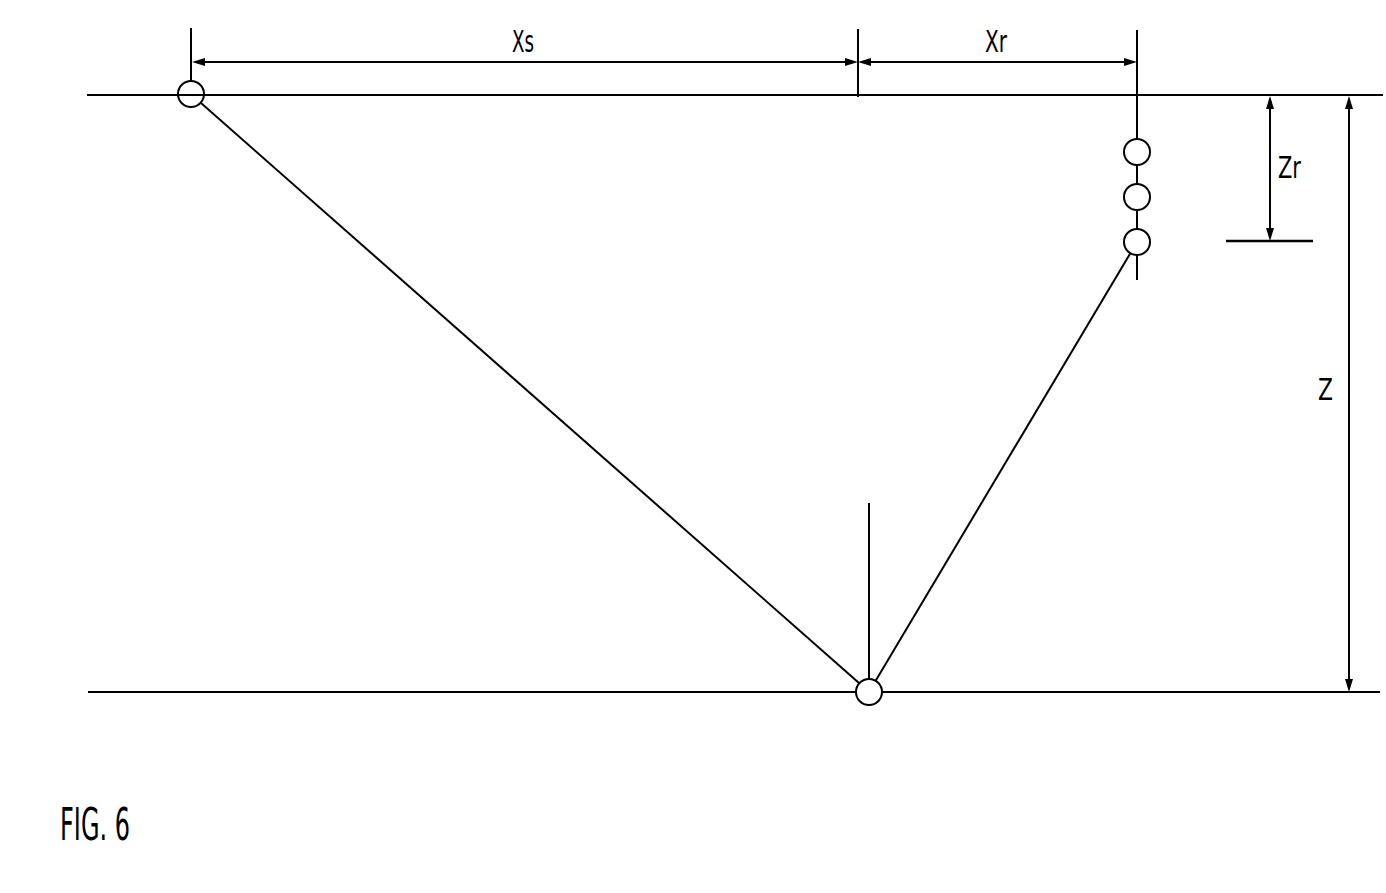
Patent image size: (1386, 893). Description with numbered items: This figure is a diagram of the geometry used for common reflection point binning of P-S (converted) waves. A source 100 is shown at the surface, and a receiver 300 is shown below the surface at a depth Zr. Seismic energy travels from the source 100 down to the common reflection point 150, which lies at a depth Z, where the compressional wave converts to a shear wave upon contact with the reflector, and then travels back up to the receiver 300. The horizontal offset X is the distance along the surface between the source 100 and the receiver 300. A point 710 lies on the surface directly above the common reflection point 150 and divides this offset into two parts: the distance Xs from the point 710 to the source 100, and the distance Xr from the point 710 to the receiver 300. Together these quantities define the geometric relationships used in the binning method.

The source 100 is at (190, 107).
The common reflection point 150 is at (869, 705).
The receiver 300 is at (1138, 268).
The point above the common reflection point 710 is at (853, 43).